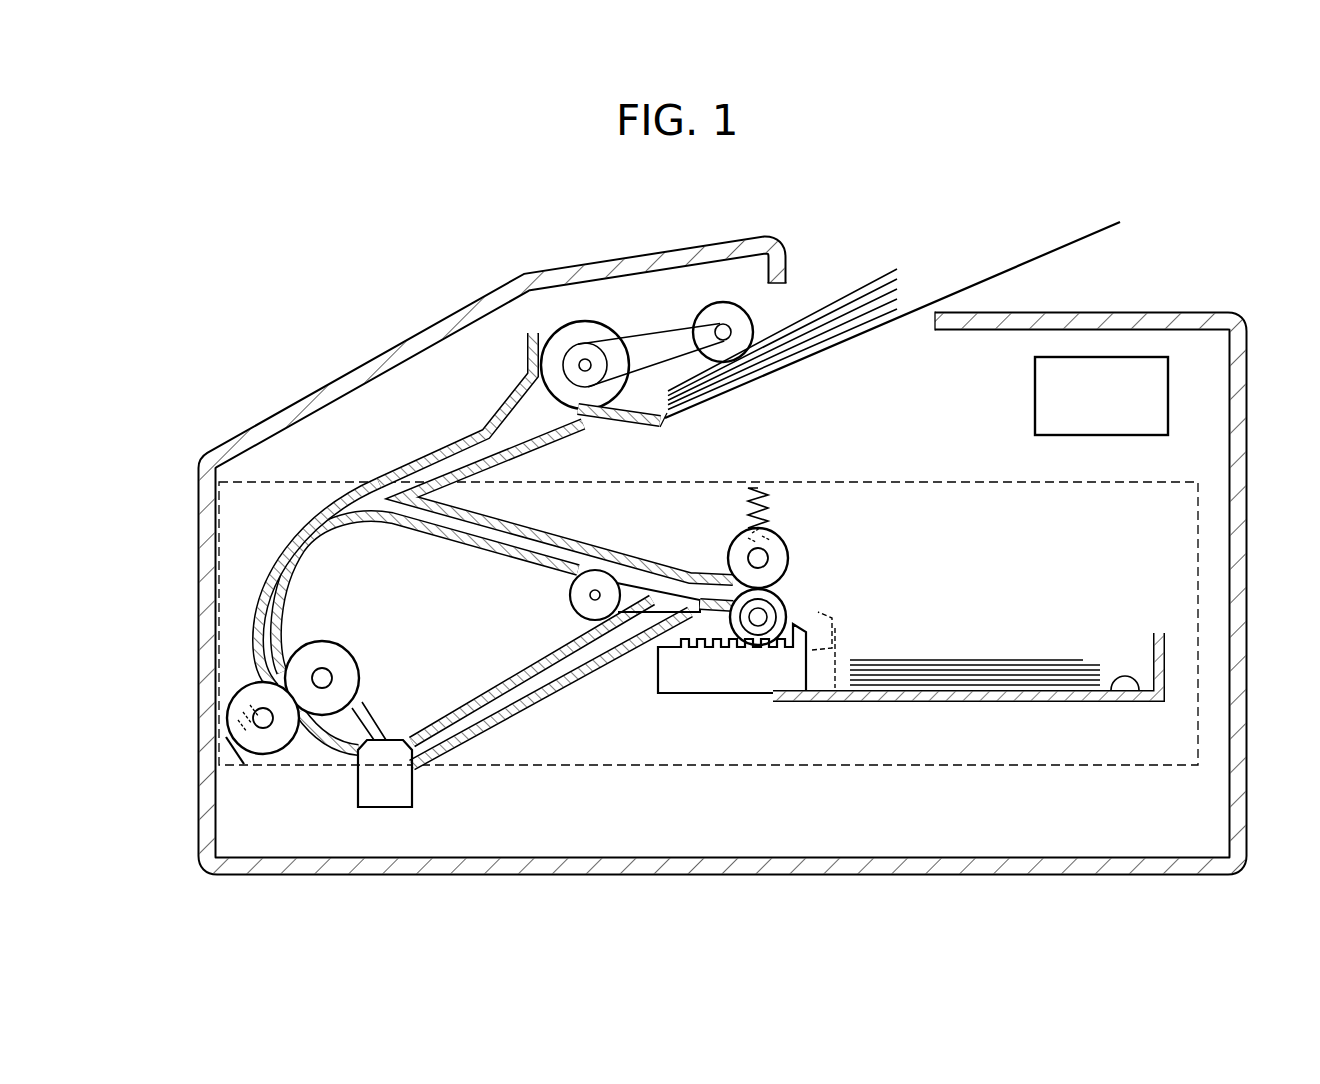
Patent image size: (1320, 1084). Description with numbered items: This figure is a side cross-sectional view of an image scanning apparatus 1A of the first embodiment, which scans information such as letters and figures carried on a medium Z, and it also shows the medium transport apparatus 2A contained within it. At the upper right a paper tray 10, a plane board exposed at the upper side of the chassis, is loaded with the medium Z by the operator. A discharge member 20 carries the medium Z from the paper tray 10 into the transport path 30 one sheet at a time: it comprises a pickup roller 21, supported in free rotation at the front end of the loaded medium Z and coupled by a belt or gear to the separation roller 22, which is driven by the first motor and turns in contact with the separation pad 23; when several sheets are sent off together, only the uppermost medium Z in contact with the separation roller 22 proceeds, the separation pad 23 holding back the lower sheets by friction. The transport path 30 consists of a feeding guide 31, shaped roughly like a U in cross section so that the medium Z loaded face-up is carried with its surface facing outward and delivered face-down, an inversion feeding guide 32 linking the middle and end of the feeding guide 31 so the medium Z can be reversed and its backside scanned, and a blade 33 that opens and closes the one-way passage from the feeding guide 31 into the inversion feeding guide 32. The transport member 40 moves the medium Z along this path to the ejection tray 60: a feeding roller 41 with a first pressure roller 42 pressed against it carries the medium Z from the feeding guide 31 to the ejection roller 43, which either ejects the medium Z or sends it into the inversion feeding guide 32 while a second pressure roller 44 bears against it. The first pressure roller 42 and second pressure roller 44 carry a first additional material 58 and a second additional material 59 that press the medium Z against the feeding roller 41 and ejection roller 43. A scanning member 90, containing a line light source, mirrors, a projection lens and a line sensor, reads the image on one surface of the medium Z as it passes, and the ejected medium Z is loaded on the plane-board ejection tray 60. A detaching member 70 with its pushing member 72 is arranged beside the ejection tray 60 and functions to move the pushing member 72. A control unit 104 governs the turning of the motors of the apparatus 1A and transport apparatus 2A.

The image scanning apparatus 1A is at (305, 301).
The medium transport apparatus 2A is at (1200, 562).
The paper tray 10 is at (1022, 258).
The discharge member 20 is at (668, 303).
The pickup roller 21 is at (722, 303).
The separation roller 22 is at (572, 322).
The separation pad 23 is at (652, 410).
The transport path 30 is at (322, 505).
The feeding guide 31 is at (250, 622).
The inversion feeding guide 32 is at (558, 528).
The blade 33 is at (586, 620).
The transport member 40 is at (244, 761).
The feeding roller 41 is at (338, 645).
The first pressure roller 42 is at (282, 758).
The ejection roller 43 is at (788, 612).
The second pressure roller 44 is at (790, 560).
The first additional material 58 is at (226, 742).
The second additional material 59 is at (758, 488).
The ejection tray 60 is at (1128, 703).
The lifting mechanism 70 is at (684, 706).
The pushing member 72 is at (752, 695).
The scanning member 90 is at (413, 780).
The control unit 104 is at (1035, 393).
The medium Z is at (848, 308).